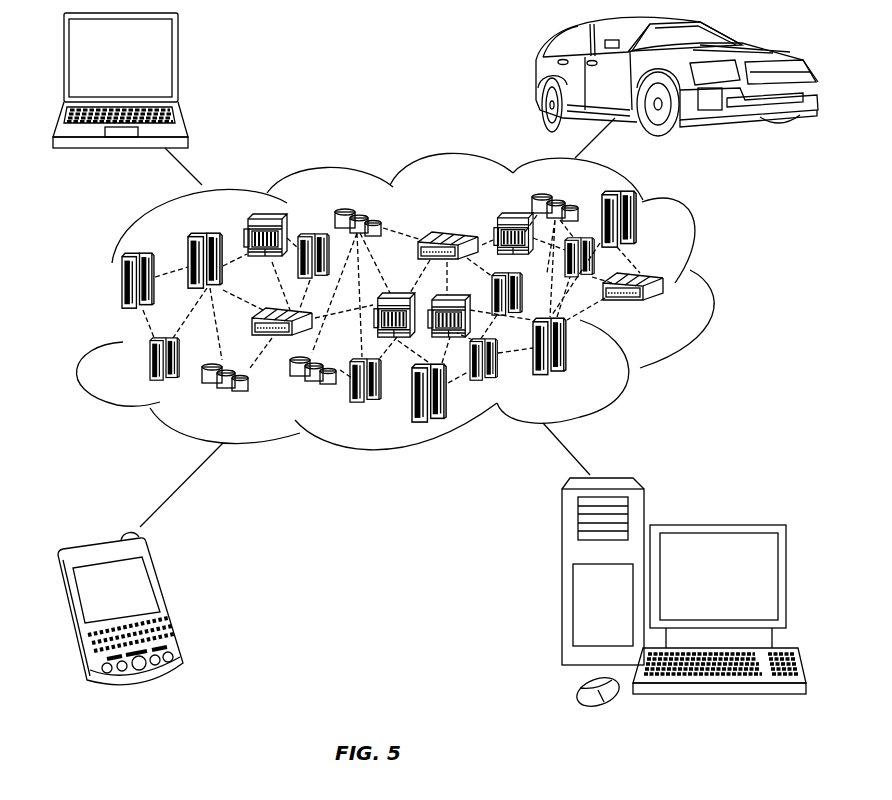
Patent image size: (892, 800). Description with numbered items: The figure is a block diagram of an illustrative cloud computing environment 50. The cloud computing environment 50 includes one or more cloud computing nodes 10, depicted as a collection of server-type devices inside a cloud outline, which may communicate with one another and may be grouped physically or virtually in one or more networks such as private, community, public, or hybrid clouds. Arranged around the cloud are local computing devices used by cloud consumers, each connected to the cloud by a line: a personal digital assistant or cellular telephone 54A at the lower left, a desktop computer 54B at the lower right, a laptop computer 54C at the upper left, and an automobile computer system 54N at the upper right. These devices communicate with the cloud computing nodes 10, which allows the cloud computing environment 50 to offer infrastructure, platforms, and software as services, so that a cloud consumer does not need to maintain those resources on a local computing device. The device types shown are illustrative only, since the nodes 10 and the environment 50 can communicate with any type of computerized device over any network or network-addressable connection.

The laptop computer 54C is at (178, 65).
The automobile computer system 54N is at (537, 78).
The personal digital assistant (PDA) or cellular telephone 54A is at (172, 600).
The desktop computer 54B is at (717, 525).
The cloud computing environment 50 is at (715, 288).
The cloud computing nodes 10 is at (676, 313).